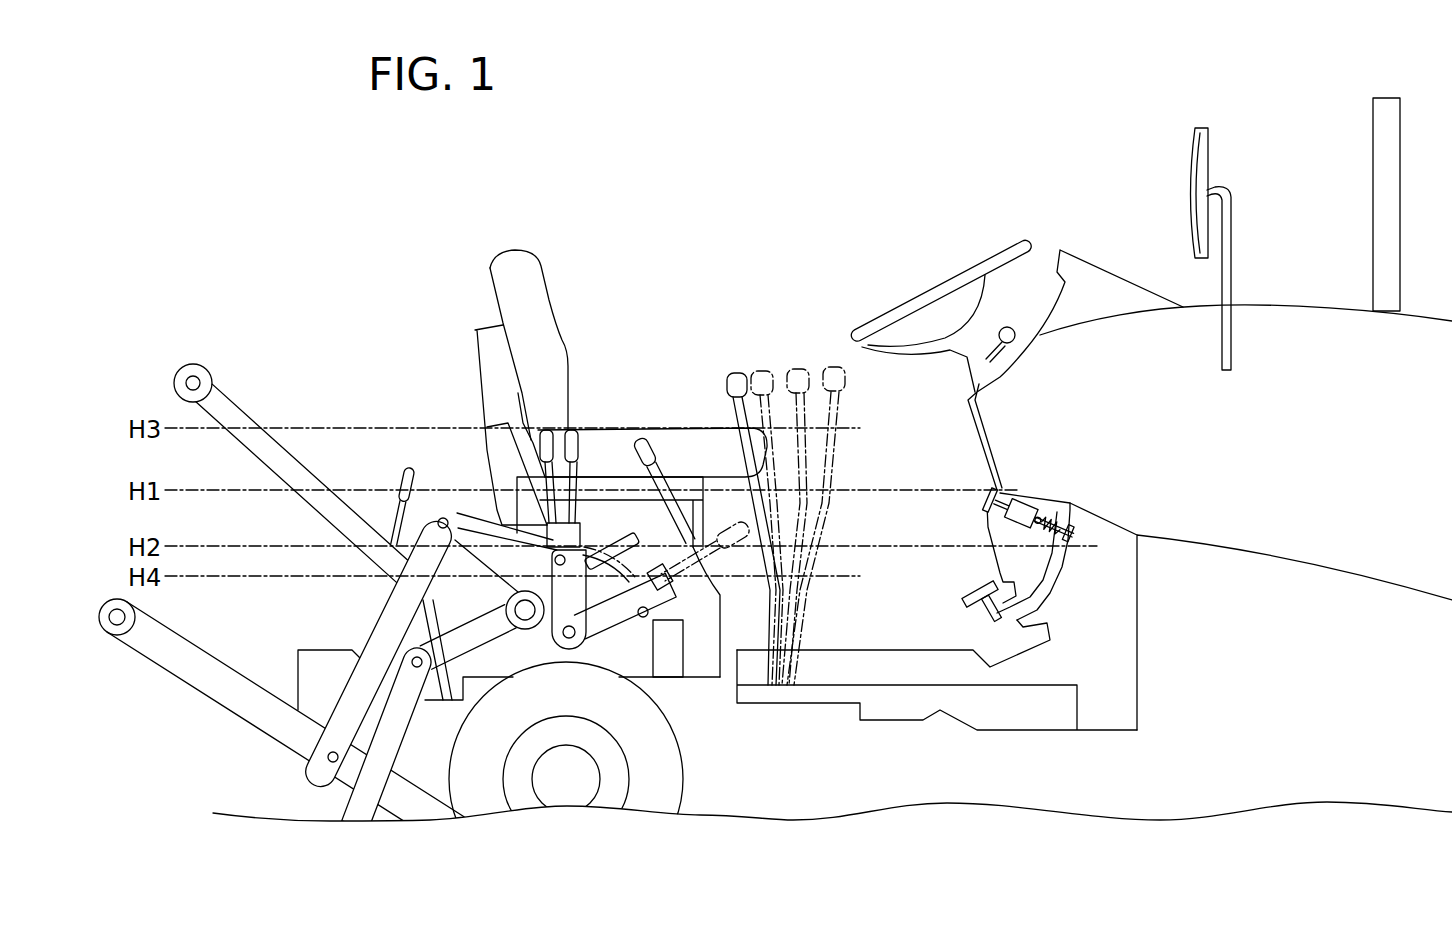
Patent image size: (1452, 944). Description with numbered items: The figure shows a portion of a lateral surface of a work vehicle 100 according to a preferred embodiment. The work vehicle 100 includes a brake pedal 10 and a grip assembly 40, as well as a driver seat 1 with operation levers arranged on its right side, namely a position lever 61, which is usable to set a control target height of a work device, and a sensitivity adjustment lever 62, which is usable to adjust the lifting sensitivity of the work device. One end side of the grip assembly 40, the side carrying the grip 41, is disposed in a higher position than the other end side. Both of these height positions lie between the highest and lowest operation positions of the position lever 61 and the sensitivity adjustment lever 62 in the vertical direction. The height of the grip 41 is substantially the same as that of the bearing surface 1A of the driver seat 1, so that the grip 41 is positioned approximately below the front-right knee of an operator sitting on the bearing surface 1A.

The driver seat 1 is at (515, 253).
The bearing surface 1A is at (708, 440).
The work vehicle 100 is at (1016, 164).
The position lever 61 is at (673, 507).
The sensitivity adjustment lever 62 is at (733, 575).
The brake pedal 10 is at (1050, 573).
The grip assembly 40 is at (993, 530).
The grip 41 is at (985, 501).